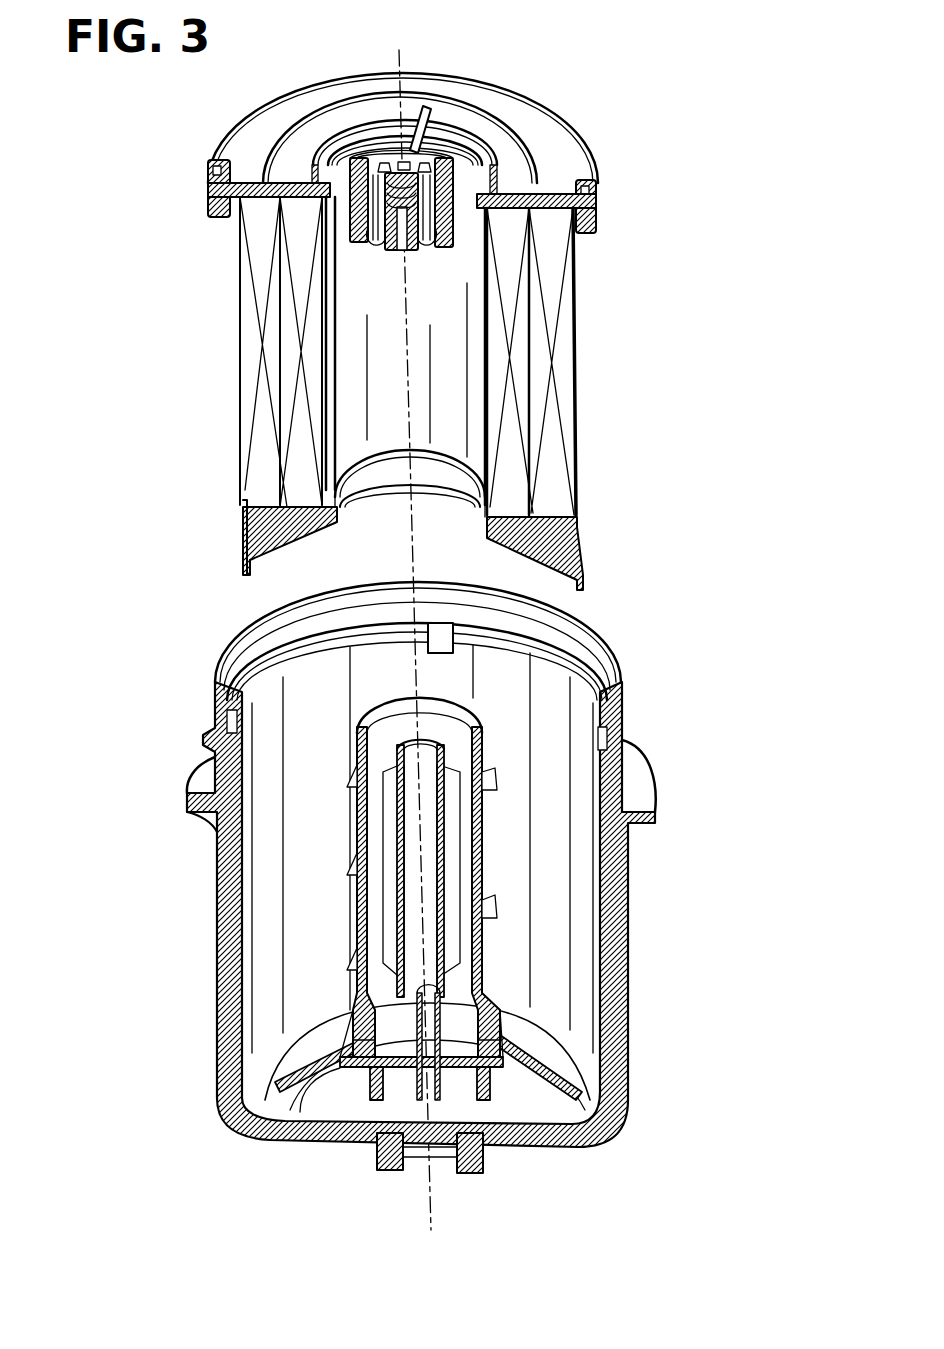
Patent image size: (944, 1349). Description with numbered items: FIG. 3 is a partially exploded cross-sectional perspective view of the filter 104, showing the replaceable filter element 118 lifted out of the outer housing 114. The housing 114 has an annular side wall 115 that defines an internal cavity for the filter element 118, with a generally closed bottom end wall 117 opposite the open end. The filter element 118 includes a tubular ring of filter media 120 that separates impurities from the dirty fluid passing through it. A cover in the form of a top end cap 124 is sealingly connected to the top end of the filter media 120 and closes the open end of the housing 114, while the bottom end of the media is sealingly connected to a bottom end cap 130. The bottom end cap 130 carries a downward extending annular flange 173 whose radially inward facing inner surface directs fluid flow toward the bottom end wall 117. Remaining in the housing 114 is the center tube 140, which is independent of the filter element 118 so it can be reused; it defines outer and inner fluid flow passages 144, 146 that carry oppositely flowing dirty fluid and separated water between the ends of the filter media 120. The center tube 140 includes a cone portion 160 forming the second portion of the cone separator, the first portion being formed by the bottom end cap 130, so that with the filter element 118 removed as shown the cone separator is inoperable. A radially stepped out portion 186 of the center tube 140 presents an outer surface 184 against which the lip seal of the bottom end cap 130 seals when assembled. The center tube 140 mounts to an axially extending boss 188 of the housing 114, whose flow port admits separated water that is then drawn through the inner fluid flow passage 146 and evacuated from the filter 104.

The filter 104 is at (137, 107).
The outer housing 114 is at (232, 965).
The annular side wall 115 is at (626, 980).
The bottom end wall 117 is at (546, 1147).
The filter element 118 is at (668, 228).
The filter media 120 is at (565, 322).
The top end cap 124 is at (553, 145).
The bottom end cap 130 is at (577, 532).
The center tube 140 is at (502, 957).
The outer fluid flow passage 144 is at (457, 907).
The inner fluid flow passage 146 is at (433, 883).
The cone portion 160 is at (317, 1077).
The annular flange 173 is at (243, 560).
The outer surface 184 is at (503, 1040).
The radially stepped out portion 186 is at (500, 1030).
The boss 188 is at (338, 1140).